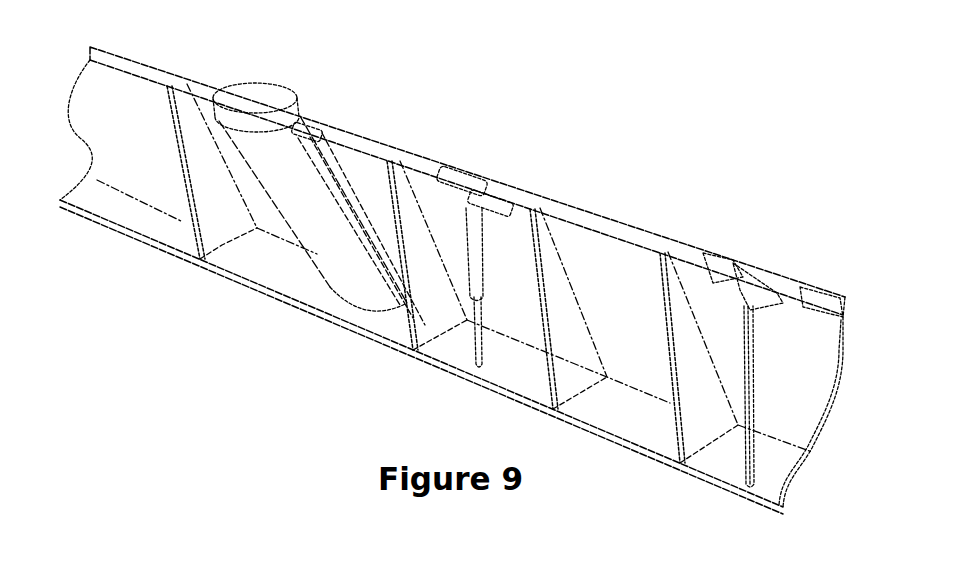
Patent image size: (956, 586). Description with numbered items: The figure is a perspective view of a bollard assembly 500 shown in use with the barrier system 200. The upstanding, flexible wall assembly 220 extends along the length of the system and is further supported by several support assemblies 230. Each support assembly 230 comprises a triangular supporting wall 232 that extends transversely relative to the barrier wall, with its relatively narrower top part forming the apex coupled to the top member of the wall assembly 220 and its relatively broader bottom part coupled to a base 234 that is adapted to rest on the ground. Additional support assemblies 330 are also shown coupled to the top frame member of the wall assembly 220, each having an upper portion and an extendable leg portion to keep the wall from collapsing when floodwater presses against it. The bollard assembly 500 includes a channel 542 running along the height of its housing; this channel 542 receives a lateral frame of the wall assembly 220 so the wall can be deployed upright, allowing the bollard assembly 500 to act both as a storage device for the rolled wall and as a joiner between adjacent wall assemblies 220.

The barrier system 200 is at (571, 195).
The wall assembly 220 is at (167, 71).
The support assembly 230 is at (177, 147).
The triangular supporting wall 232 is at (217, 223).
The base 234 is at (222, 246).
The additional support assembly 330 is at (493, 163).
The bollard assembly 500 is at (263, 82).
The channel 542 is at (313, 126).